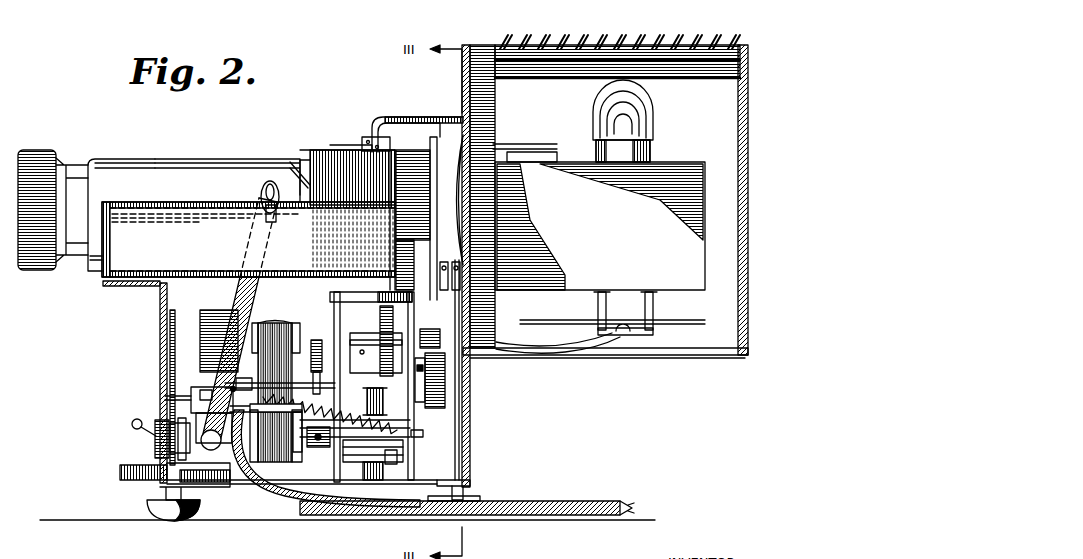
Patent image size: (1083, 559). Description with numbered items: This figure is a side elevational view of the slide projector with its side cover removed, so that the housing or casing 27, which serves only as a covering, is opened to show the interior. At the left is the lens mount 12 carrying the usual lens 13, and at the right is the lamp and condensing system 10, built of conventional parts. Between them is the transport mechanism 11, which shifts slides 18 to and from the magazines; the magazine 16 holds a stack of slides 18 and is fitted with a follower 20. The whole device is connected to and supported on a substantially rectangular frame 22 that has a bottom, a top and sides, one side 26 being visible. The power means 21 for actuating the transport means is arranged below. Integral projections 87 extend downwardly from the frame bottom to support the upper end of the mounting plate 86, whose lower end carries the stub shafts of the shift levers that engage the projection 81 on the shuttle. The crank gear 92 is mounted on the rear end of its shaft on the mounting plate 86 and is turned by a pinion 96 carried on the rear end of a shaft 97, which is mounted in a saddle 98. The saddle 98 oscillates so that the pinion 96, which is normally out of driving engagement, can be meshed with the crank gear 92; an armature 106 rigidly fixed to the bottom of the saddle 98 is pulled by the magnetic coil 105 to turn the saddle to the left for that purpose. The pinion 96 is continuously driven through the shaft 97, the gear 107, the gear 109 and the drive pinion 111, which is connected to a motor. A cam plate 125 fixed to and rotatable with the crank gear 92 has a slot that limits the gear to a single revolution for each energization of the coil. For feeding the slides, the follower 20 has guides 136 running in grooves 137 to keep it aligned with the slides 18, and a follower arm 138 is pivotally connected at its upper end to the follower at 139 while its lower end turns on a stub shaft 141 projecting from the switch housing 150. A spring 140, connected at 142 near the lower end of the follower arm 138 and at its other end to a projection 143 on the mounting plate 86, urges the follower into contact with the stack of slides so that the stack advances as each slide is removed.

The lamp and condensing system 10 is at (755, 54).
The transport mechanism 11 is at (449, 157).
The lens mount 12 is at (207, 157).
The lens 13 is at (58, 157).
The magazine 16 is at (166, 202).
The slides 18 is at (323, 150).
The follower 20 is at (302, 174).
The power means 21 is at (245, 543).
The frame 22 is at (398, 136).
The side 26 is at (417, 205).
The housing 27 is at (415, 113).
The projection 81 is at (464, 268).
The mounting plate 86 is at (410, 458).
The projections 87 is at (390, 293).
The crank gear 92 is at (445, 380).
The pinion 96 is at (437, 330).
The shaft 97 is at (350, 338).
The saddle 98 is at (366, 333).
The magnetic coil 105 is at (393, 458).
The armature 106 is at (386, 404).
The gear 107 is at (395, 358).
The gear 109 is at (313, 340).
The drive pinion 111 is at (318, 448).
The cam plate 125 is at (438, 363).
The guides 136 is at (272, 216).
The grooves 137 is at (181, 212).
The follower arm 138 is at (238, 291).
The pivotal connection 139 is at (263, 203).
The spring 140 is at (281, 458).
The stub shaft 141 is at (212, 444).
The spring connection 142 is at (231, 388).
The projection 143 is at (424, 433).
The switch housing 150 is at (193, 410).